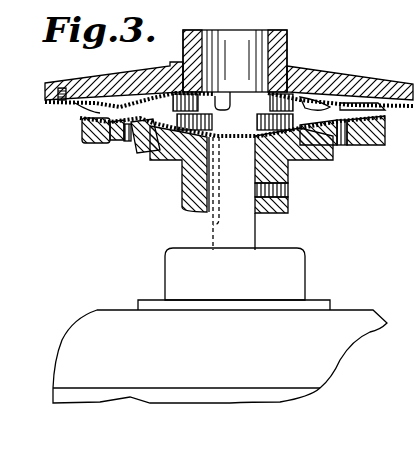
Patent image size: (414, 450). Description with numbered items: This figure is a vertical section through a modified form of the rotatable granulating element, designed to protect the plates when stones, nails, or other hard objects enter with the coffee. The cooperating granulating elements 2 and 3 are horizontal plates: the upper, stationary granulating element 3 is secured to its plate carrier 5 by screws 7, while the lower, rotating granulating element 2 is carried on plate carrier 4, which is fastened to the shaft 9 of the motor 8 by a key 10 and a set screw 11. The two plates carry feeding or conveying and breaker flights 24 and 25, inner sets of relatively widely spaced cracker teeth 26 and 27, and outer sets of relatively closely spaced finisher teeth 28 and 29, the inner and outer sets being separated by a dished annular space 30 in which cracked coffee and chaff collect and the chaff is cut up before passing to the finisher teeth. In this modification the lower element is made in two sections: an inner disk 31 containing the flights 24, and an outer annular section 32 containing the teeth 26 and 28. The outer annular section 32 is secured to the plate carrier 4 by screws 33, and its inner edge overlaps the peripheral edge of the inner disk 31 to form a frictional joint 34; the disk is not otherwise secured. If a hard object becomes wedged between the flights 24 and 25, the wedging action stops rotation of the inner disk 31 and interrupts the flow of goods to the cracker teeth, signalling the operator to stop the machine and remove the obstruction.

The granulating element 2 is at (80, 122).
The granulating element 3 is at (73, 105).
The plate carrier 4 is at (385, 140).
The plate carrier 5 is at (377, 97).
The screw 7 is at (62, 88).
The motor 8 is at (220, 325).
The shaft 9 is at (250, 233).
The key 10 is at (207, 224).
The set screw 11 is at (288, 191).
The feeding or conveying and breaker flights 24 is at (270, 122).
The feeding or conveying and breaker flights 25 is at (270, 100).
The inner set of teeth 26 is at (330, 152).
The inner set of teeth 27 is at (314, 102).
The outer set of teeth 28 is at (362, 120).
The outer set of teeth 29 is at (358, 102).
The dished annular space 30 is at (123, 107).
The inner disk 31 is at (182, 157).
The outer annular section 32 is at (112, 137).
The screws 33 is at (128, 141).
The frictional joint 34 is at (153, 150).